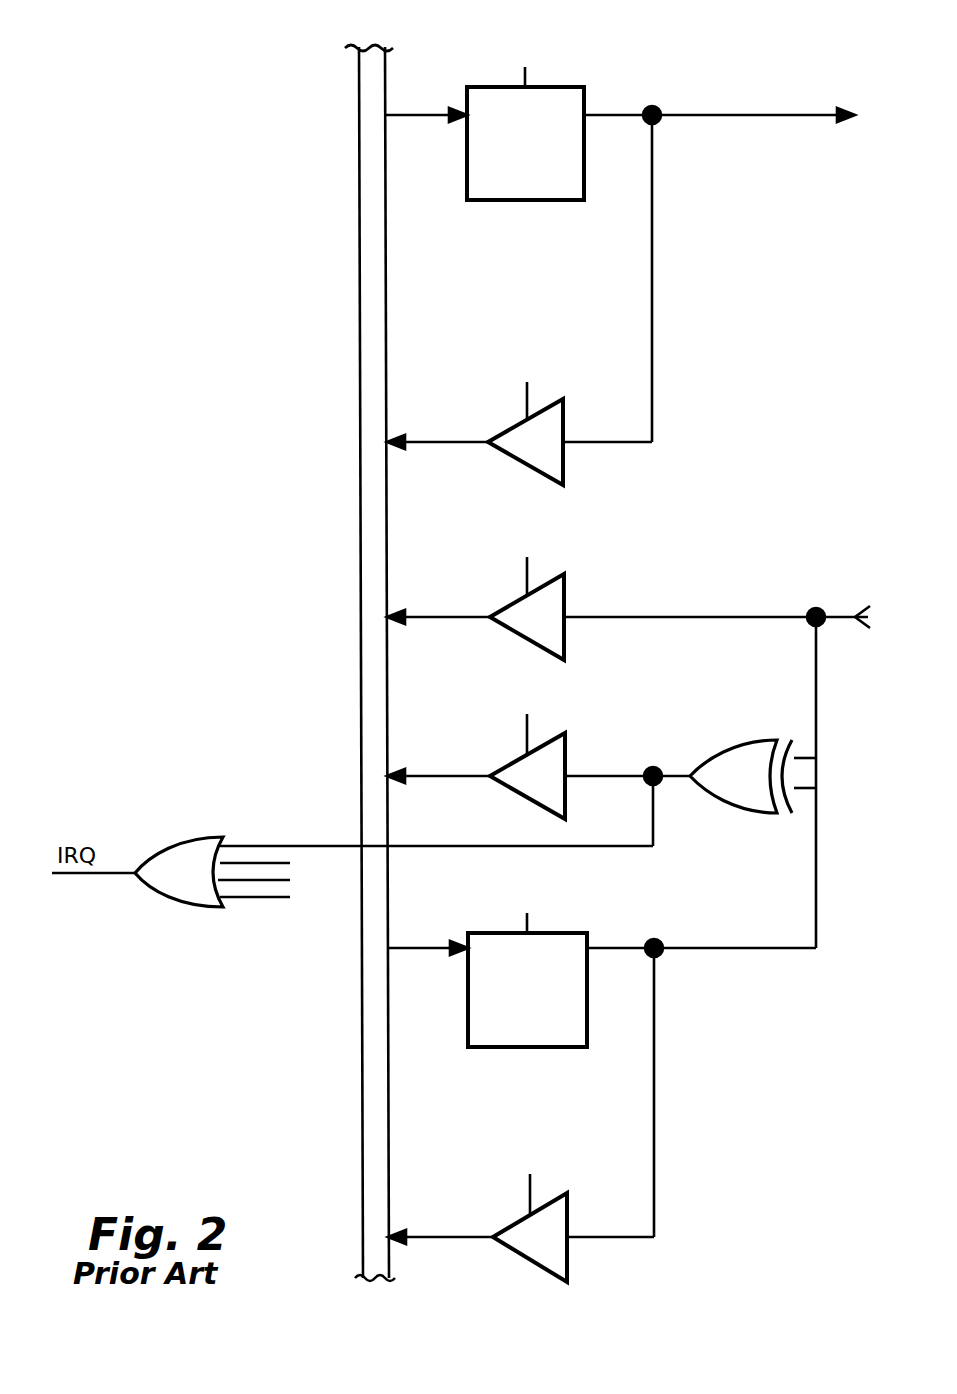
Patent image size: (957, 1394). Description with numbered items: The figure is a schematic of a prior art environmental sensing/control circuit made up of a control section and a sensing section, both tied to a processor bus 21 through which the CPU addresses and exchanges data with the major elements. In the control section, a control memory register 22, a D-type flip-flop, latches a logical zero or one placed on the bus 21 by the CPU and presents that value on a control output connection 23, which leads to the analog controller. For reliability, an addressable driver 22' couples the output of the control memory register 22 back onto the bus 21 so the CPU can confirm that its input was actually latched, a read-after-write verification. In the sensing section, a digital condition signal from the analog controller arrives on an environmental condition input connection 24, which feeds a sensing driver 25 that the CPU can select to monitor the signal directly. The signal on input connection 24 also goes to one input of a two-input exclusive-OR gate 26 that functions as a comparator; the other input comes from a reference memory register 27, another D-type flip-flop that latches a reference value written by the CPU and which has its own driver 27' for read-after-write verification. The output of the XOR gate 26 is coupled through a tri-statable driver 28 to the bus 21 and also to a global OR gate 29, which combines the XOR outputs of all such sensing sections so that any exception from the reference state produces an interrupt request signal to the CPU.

The processor bus 21 is at (362, 82).
The control memory register 22 is at (553, 110).
The addressable driver 22' is at (570, 443).
The control output connection 23 is at (786, 113).
The environmental condition input connection 24 is at (843, 613).
The sensing driver 25 is at (565, 602).
The exclusive-OR gate 26 is at (752, 813).
The reference memory register 27 is at (499, 999).
The driver 27' is at (563, 1240).
The tri-statable driver 28 is at (567, 748).
The OR gate 29 is at (178, 836).